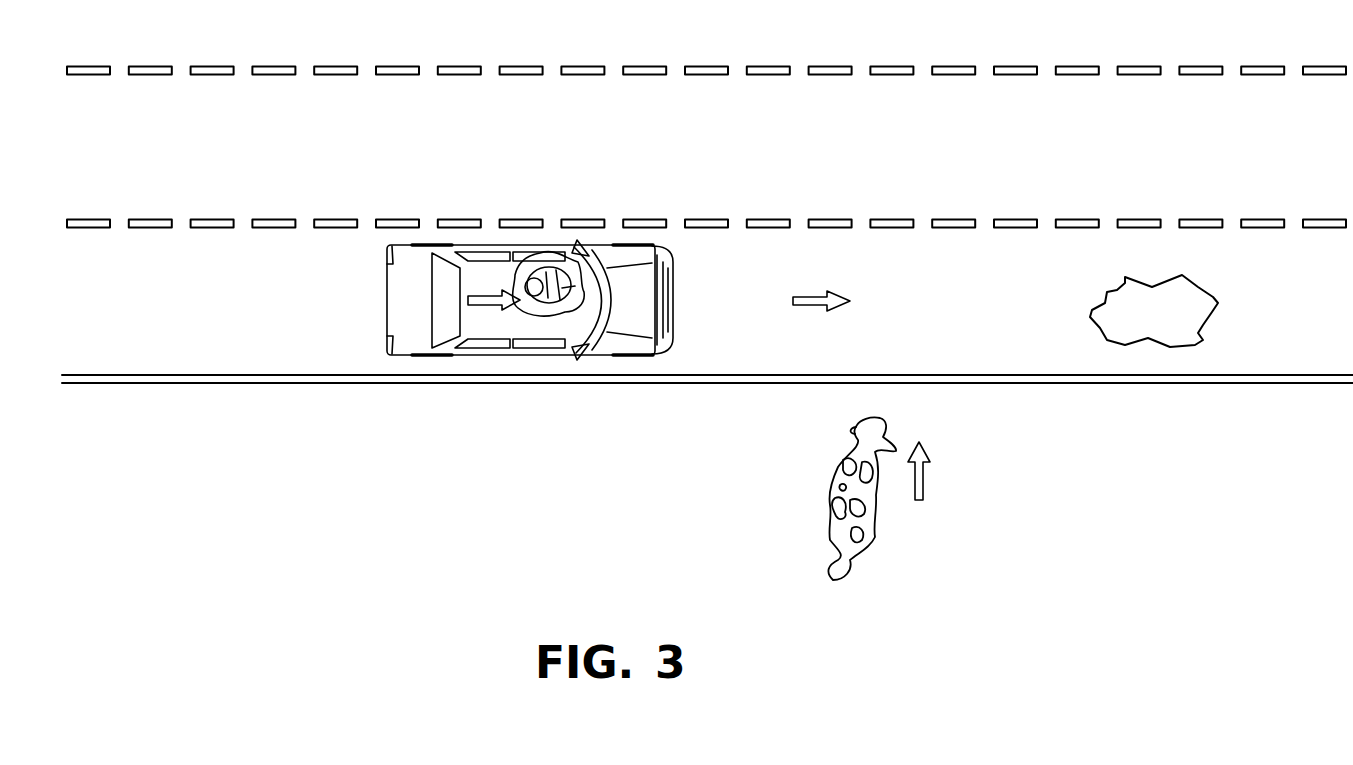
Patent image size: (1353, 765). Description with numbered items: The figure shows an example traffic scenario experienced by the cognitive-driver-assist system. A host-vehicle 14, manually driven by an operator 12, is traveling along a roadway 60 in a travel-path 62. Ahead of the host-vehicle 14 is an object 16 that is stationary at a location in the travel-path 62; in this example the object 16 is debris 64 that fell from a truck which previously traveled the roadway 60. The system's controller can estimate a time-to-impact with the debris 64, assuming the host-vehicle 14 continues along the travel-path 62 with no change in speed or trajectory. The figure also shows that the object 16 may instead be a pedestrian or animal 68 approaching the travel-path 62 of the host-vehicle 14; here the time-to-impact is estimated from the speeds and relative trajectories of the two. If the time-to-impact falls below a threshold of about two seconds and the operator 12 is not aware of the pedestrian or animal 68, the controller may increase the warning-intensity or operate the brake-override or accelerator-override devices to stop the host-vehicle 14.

The operator 12 is at (504, 301).
The host-vehicle 14 is at (448, 352).
The object 16 is at (1009, 390).
The roadway 60 is at (220, 368).
The travel-path 62 is at (808, 298).
The debris 64 is at (1195, 347).
The pedestrian or animal 68 is at (828, 515).